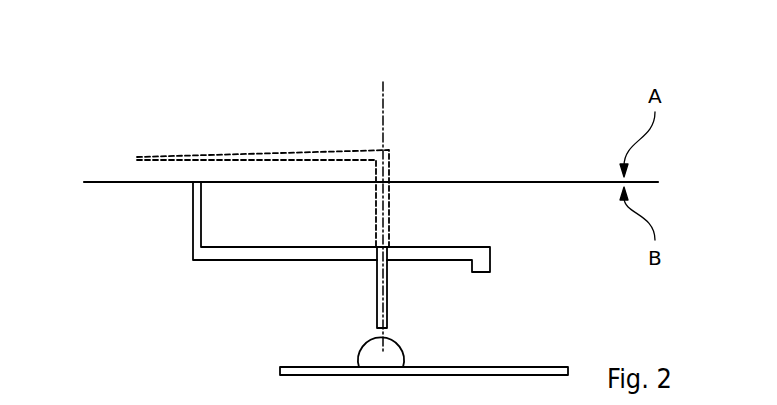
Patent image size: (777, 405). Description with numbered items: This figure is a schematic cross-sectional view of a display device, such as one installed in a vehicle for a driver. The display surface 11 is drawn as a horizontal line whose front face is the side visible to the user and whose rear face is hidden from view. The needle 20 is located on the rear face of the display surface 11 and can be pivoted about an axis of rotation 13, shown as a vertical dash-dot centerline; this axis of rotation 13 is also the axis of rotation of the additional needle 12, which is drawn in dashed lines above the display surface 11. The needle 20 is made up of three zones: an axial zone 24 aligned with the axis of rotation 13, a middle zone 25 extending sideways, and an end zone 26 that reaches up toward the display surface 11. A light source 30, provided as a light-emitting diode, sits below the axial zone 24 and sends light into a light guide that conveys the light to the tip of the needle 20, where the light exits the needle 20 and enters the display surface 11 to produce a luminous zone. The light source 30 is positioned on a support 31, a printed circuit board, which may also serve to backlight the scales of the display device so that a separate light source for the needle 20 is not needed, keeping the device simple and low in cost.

The display surface 11 is at (522, 182).
The additional needle 12 is at (307, 150).
The axis of rotation 13 is at (383, 110).
The needle 20 is at (270, 258).
The axial zone 24 is at (370, 263).
The middle zone 25 is at (370, 242).
The end zone 26 is at (177, 187).
The light source 30 is at (392, 357).
The support 31 is at (503, 368).